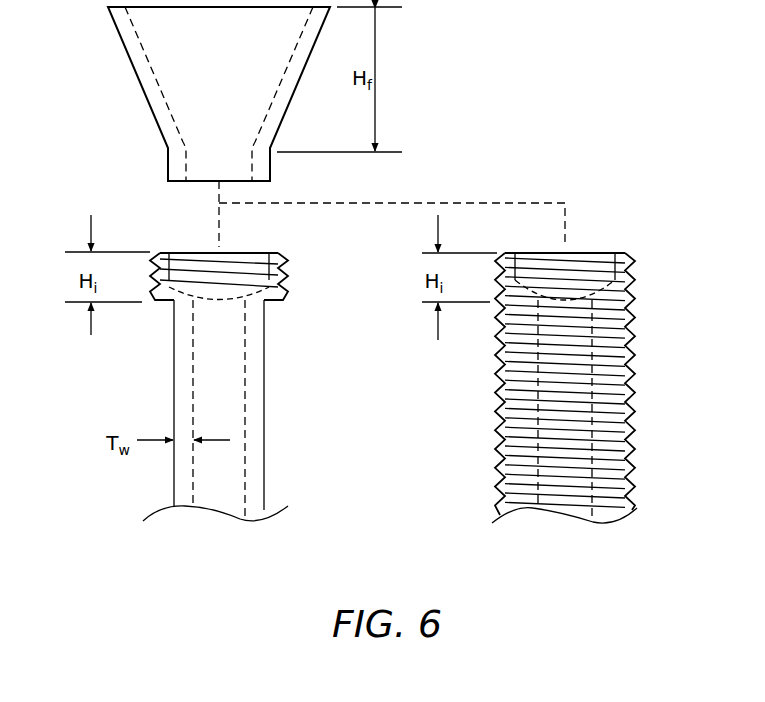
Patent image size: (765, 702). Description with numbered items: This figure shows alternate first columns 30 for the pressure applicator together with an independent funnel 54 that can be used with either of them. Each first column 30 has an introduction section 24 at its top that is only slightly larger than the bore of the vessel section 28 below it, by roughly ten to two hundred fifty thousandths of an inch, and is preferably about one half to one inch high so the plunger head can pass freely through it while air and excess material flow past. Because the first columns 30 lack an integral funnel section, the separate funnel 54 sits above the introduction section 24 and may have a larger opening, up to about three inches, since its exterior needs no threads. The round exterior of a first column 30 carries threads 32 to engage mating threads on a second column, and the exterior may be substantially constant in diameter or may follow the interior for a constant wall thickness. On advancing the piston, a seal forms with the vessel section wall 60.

The funnel 54 is at (288, 107).
The first column 30 is at (390, 385).
The introduction section 24 is at (283, 272).
The vessel section 28 is at (258, 400).
The threads 32 is at (157, 277).
The vessel section wall 60 is at (247, 452).